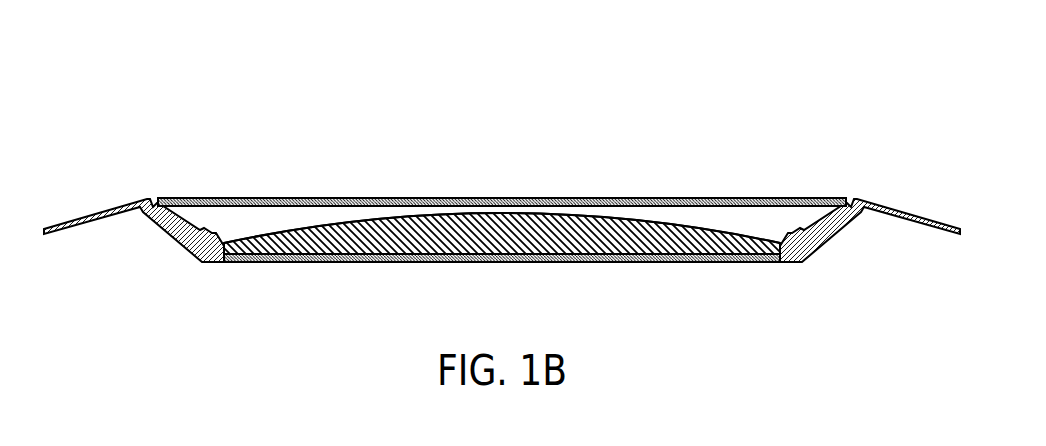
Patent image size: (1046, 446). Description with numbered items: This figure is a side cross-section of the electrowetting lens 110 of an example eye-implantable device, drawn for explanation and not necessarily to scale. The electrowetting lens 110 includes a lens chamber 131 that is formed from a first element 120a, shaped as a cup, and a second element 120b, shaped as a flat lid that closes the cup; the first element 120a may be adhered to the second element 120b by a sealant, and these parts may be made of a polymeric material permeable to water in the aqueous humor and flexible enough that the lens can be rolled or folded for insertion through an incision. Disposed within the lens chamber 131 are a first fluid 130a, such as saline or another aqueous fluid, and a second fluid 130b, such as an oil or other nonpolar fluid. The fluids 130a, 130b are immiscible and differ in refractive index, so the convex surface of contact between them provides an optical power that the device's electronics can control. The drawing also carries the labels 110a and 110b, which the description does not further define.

The electrowetting lens 110 is at (502, 197).
The top plate 110a is at (503, 201).
The bottom plate 110b is at (597, 263).
The first element 120a is at (840, 230).
The second element 120b is at (630, 198).
The first fluid 130a is at (743, 213).
The second fluid 130b is at (500, 247).
The lens chamber 131 is at (309, 222).